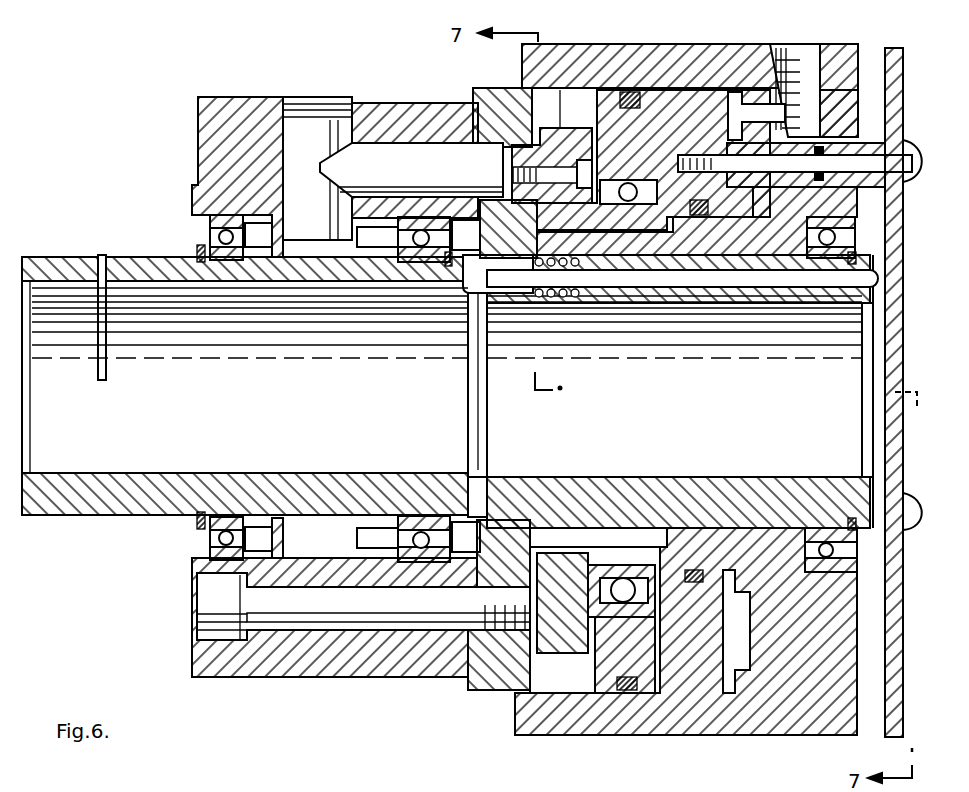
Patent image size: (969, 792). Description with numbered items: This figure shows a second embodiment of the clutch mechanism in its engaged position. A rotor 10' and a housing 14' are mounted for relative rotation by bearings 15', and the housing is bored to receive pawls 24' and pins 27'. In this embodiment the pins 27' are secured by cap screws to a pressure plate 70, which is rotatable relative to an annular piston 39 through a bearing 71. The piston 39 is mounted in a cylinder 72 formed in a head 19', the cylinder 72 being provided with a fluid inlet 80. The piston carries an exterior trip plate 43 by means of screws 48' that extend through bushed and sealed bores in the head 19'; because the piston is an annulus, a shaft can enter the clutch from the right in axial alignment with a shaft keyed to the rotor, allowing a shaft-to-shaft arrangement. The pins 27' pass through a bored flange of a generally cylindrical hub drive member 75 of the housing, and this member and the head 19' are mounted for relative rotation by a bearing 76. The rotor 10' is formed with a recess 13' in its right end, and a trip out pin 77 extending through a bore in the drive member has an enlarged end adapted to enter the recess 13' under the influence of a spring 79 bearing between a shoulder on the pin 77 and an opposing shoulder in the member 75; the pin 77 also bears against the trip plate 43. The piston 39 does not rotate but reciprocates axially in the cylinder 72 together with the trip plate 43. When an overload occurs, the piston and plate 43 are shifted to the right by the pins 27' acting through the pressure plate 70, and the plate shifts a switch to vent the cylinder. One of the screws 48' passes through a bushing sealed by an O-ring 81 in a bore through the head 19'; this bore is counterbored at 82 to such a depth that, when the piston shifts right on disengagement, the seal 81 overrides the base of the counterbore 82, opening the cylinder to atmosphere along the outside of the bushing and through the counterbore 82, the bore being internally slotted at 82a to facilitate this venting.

The rotor 10' is at (245, 410).
The recess 13' is at (643, 391).
The housing 14' is at (376, 153).
The bearings 15' is at (328, 394).
The head 19' is at (690, 79).
The pawls 24' is at (317, 149).
The pins 27' is at (411, 170).
The annular piston 39 is at (690, 103).
The trip plate 43 is at (898, 83).
The screws 48' is at (919, 324).
The pressure plate 70 is at (580, 133).
The bearing 71 is at (641, 567).
The cylinder 72 is at (740, 92).
The hub drive member 75 is at (756, 312).
The bearing 76 is at (852, 245).
The trip out pin 77 is at (630, 287).
The spring 79 is at (577, 268).
The fluid inlet 80 is at (787, 62).
The O-ring 81 is at (823, 135).
The counterbore 82 is at (858, 188).
The internal slot 82a is at (775, 157).